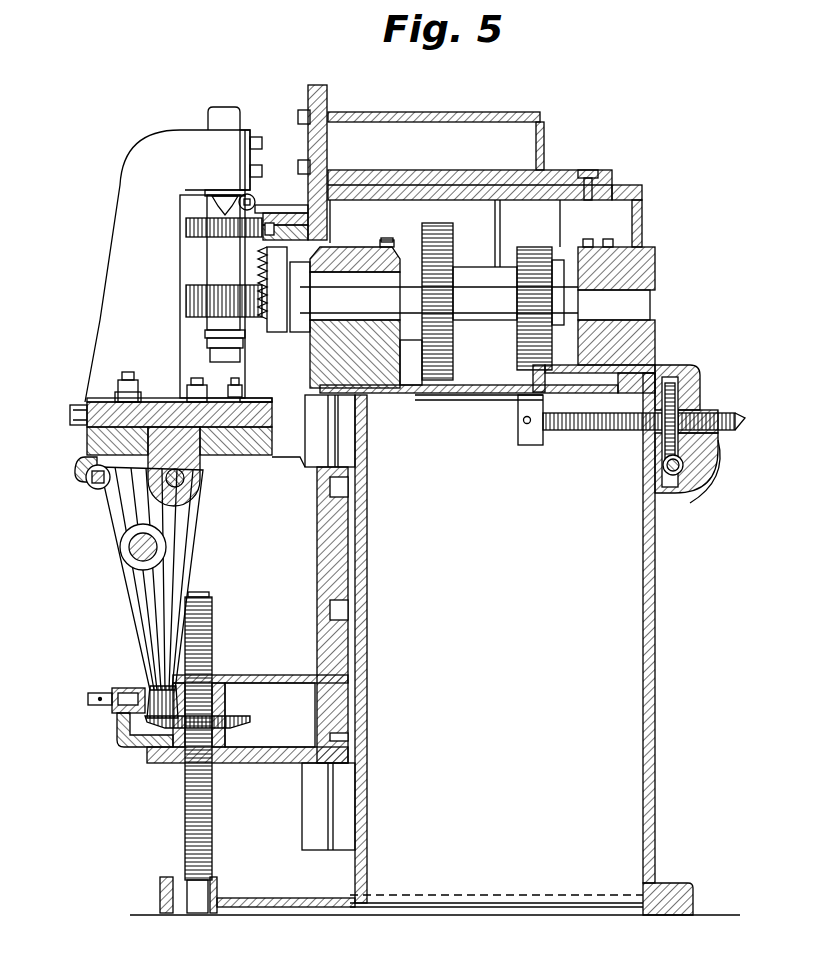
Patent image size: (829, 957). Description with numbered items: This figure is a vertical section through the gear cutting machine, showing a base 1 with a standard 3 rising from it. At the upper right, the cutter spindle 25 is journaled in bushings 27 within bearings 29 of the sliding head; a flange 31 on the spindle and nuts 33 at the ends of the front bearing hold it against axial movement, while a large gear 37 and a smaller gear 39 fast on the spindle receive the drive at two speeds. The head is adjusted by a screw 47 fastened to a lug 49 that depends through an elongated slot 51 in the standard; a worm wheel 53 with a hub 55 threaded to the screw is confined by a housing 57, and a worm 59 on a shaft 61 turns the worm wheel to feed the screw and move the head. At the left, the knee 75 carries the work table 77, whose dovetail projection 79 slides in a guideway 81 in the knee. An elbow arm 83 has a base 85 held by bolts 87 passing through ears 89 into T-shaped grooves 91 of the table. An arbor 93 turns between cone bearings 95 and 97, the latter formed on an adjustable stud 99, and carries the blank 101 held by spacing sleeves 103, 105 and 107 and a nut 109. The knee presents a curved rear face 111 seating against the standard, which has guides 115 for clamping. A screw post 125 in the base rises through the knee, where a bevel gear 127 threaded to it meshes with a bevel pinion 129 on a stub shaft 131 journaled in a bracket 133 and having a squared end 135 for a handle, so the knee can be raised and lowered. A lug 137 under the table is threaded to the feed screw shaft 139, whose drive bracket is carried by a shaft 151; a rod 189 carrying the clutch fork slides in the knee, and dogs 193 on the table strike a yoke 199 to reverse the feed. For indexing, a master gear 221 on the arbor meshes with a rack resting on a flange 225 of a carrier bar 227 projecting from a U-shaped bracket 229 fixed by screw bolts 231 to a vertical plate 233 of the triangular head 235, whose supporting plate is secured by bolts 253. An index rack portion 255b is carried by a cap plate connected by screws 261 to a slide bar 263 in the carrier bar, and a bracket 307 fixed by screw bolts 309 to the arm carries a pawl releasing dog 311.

The base 1 is at (695, 895).
The standard 3 is at (650, 625).
The spindle 25 is at (320, 340).
The bushings 27 is at (382, 323).
The bearings 29 is at (600, 250).
The flange 31 is at (305, 299).
The nuts 33 is at (455, 292).
The large gear 37 is at (453, 250).
The smaller gear 39 is at (535, 250).
The screw 47 is at (568, 428).
The lug 49 is at (522, 433).
The elongated slot 51 is at (463, 400).
The worm wheel 53 is at (680, 393).
The hub 55 is at (690, 412).
The housing 57 is at (698, 373).
The worm 59 is at (685, 463).
The shaft 61 is at (708, 481).
The knee 75 is at (118, 614).
The work table 77 is at (178, 402).
The dovetail projection 79 is at (117, 435).
The guideway 81 is at (118, 428).
The elbow arm 83 is at (105, 262).
The base 85 is at (203, 393).
The bolts 87 is at (118, 380).
The ears 89 is at (116, 394).
The T-shaped grooves 91 is at (115, 402).
The arbor 93 is at (238, 388).
The cone bearing 95 is at (265, 398).
The cone bearing 97 is at (215, 198).
The stud 99 is at (208, 122).
The blank 101 is at (186, 295).
The spacing sleeve 103 is at (207, 246).
The spacing sleeve 105 is at (210, 332).
The spacing sleeve 107 is at (210, 343).
The nut 109 is at (212, 356).
The curved rear face 111 is at (350, 543).
The flanges or guides 115 is at (313, 415).
The screw post 125 is at (212, 825).
The bevel gear 127 is at (245, 718).
The bevel pinion 129 is at (152, 690).
The stub shaft 131 is at (125, 688).
The bracket 133 is at (125, 736).
The squared end 135 is at (90, 697).
The lug 137 is at (200, 465).
The screw shaft 139 is at (180, 480).
The shaft 151 is at (135, 546).
The rod 189 is at (92, 480).
The dogs 193 is at (72, 415).
The yoke 199 is at (78, 460).
The master or indexing gear 221 is at (186, 228).
The flange 225 is at (262, 245).
The carrier bar 227 is at (390, 243).
The U-shaped bracket 229 is at (328, 148).
The screw bolts 231 is at (300, 165).
The vertical plate 233 is at (325, 88).
The triangular head 235 is at (428, 112).
The bolts 253 is at (588, 170).
The index rack portion 255b is at (215, 210).
The screws 261 is at (312, 205).
The slide bar 263 is at (315, 228).
The bracket 307 is at (245, 130).
The screw bolts 309 is at (262, 170).
The pawl releasing dog 311 is at (262, 205).